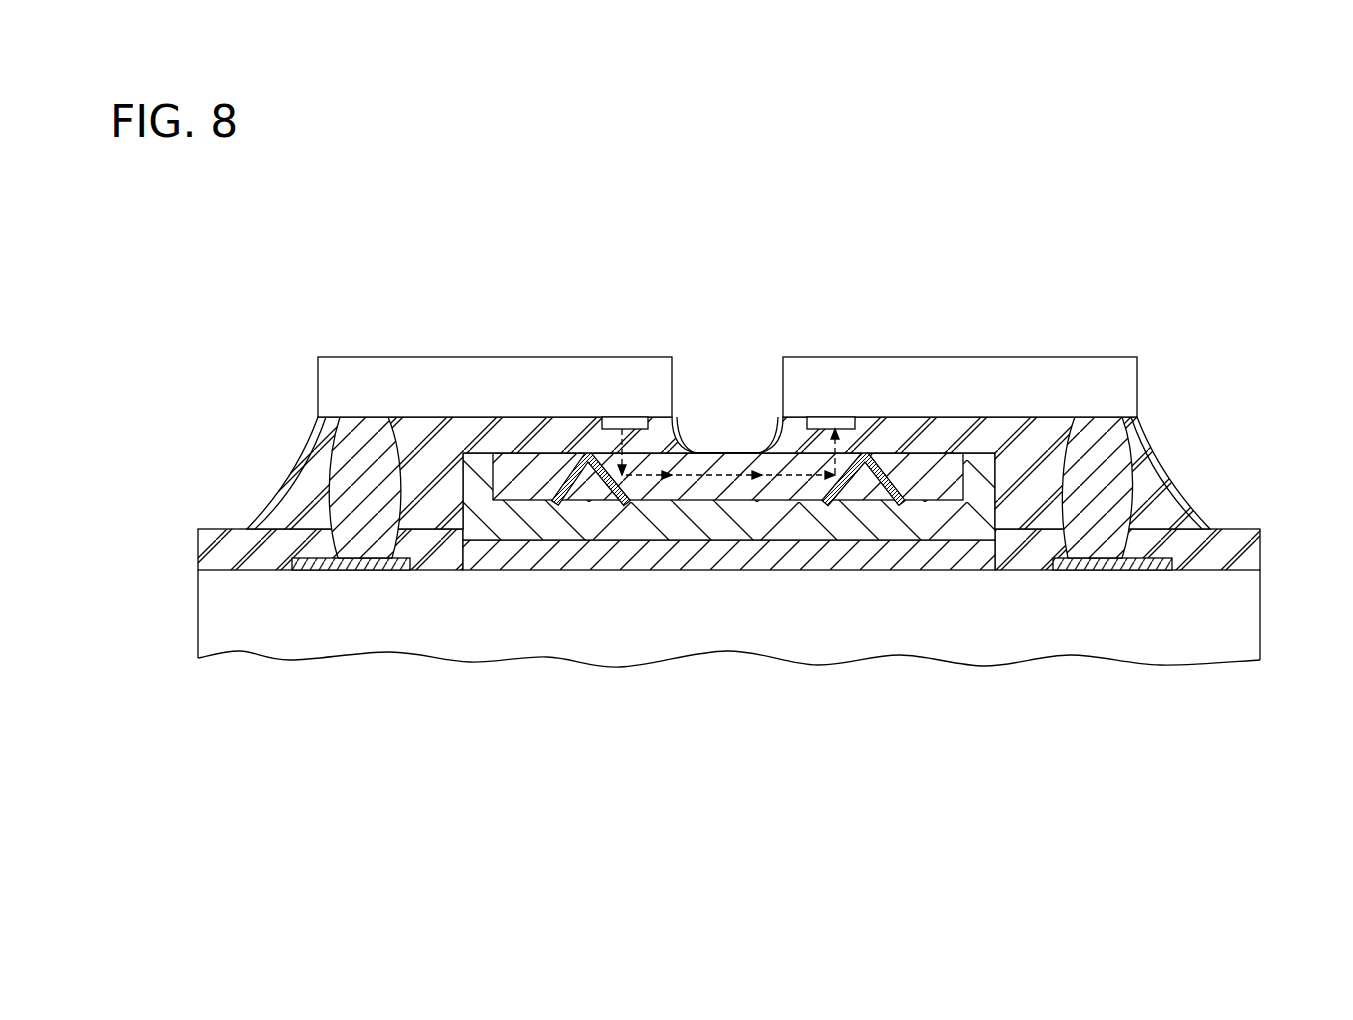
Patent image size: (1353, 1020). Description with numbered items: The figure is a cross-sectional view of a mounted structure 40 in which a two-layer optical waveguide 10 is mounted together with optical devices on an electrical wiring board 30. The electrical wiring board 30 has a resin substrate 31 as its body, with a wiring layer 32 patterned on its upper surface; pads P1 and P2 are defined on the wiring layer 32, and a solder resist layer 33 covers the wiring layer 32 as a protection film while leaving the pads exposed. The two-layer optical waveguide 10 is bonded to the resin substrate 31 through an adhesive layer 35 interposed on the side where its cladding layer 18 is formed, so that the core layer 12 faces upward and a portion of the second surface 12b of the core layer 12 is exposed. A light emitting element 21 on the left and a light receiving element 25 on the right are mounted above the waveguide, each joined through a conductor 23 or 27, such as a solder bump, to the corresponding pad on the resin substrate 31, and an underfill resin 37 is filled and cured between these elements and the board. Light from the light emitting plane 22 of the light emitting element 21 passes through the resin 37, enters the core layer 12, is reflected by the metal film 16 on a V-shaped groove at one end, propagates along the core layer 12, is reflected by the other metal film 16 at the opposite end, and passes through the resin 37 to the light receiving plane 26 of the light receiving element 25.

The mounted structure 40 is at (386, 273).
The electrical wiring board 30 is at (718, 629).
The resin substrate 31 is at (212, 626).
The solder resist layer 33 is at (222, 552).
The adhesive layer 35 is at (506, 572).
The wiring layer 32 is at (318, 572).
The two-layer optical waveguide 10 is at (729, 533).
The cladding layer 18 is at (702, 520).
The core layer 12 is at (706, 455).
The second surface 12b is at (734, 455).
The metal film 16 is at (607, 497).
The underfill resin 37 is at (303, 497).
The conductor 23 is at (350, 478).
The conductor 27 is at (1112, 480).
The light emitting element 21 is at (495, 358).
The light receiving element 25 is at (1005, 372).
The light emitting plane 22 is at (625, 422).
The light receiving plane 26 is at (833, 418).